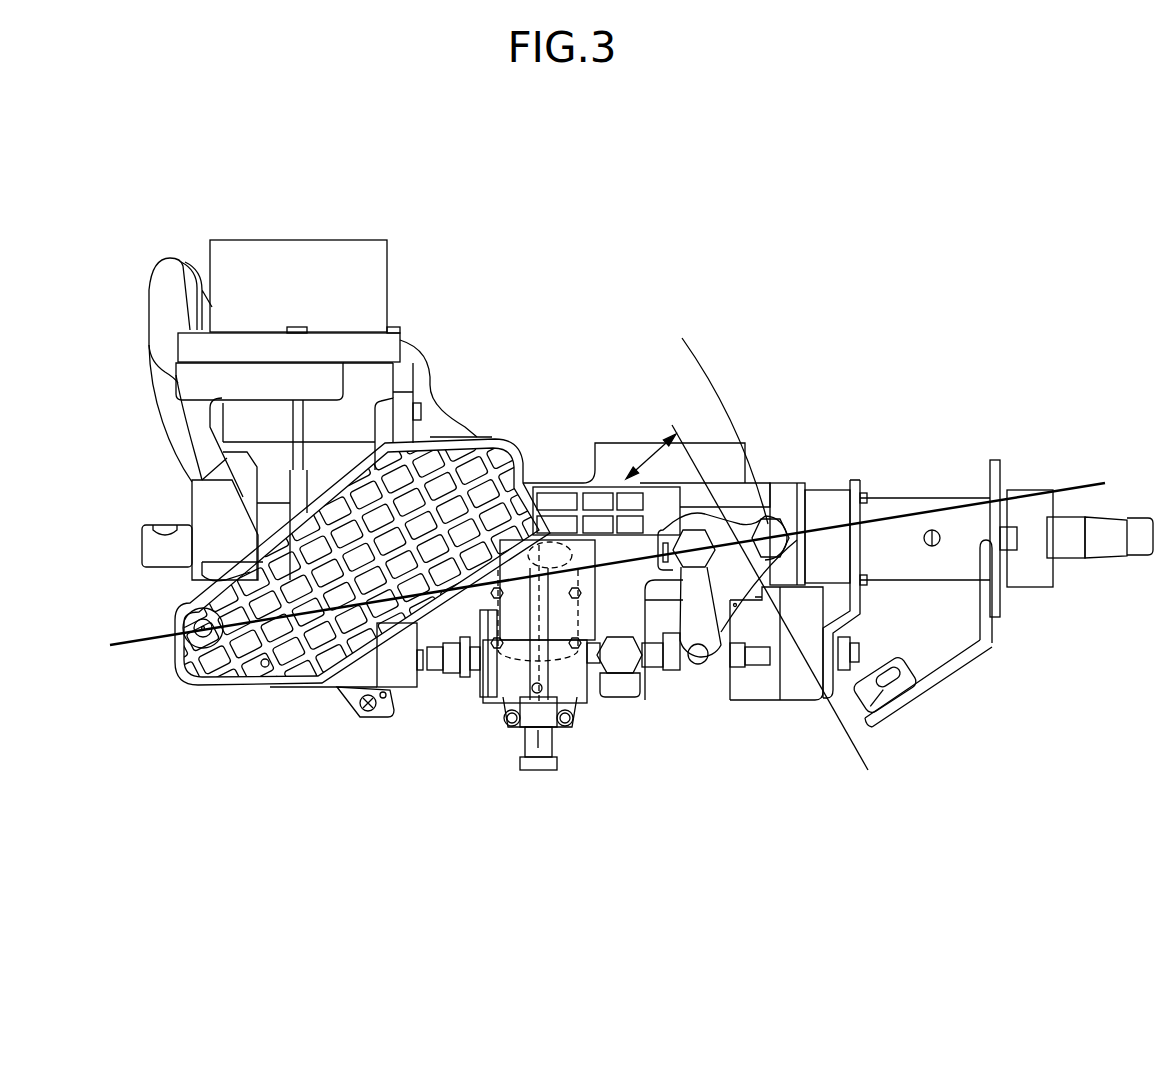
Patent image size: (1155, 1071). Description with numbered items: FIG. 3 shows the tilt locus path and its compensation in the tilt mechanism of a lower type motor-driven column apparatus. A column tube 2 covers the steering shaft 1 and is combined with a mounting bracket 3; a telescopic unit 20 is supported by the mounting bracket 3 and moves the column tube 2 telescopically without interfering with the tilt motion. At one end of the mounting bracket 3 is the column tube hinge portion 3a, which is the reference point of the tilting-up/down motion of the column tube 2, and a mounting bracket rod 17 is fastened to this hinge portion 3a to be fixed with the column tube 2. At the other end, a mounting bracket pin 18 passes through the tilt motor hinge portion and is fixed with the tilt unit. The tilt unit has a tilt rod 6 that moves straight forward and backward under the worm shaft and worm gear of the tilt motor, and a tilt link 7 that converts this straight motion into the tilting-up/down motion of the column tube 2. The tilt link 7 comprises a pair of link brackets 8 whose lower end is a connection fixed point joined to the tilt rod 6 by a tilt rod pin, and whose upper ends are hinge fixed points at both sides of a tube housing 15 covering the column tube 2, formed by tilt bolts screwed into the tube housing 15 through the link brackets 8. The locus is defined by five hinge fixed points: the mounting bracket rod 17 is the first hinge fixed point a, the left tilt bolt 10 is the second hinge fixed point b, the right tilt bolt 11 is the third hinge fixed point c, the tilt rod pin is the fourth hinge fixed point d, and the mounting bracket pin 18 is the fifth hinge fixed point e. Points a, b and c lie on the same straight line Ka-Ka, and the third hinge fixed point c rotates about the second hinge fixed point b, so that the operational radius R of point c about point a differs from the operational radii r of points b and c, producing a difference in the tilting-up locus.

The steering shaft 1 is at (1140, 545).
The column tube 2 is at (953, 565).
The mounting bracket 3 is at (610, 507).
The column tube hinge portion 3a is at (613, 560).
The tilt rod 6 is at (653, 667).
The tilt link 7 is at (788, 365).
The link bracket 8 is at (730, 590).
The left tilt bolt 10 is at (690, 565).
The right tilt bolt 11 is at (773, 527).
The tube housing 15 is at (797, 495).
The mounting bracket rod 17 is at (205, 635).
The mounting bracket pin 18 is at (610, 663).
The telescopic unit 20 is at (534, 692).
The first hinge fixed point a is at (203, 627).
The second hinge fixed point b is at (735, 605).
The third hinge fixed point c is at (777, 608).
The fourth hinge fixed point d is at (697, 662).
The fifth hinge fixed point e is at (622, 660).
The operational radius R is at (688, 354).
The operational radii r is at (651, 448).
The straight line Ka- Ka is at (612, 565).